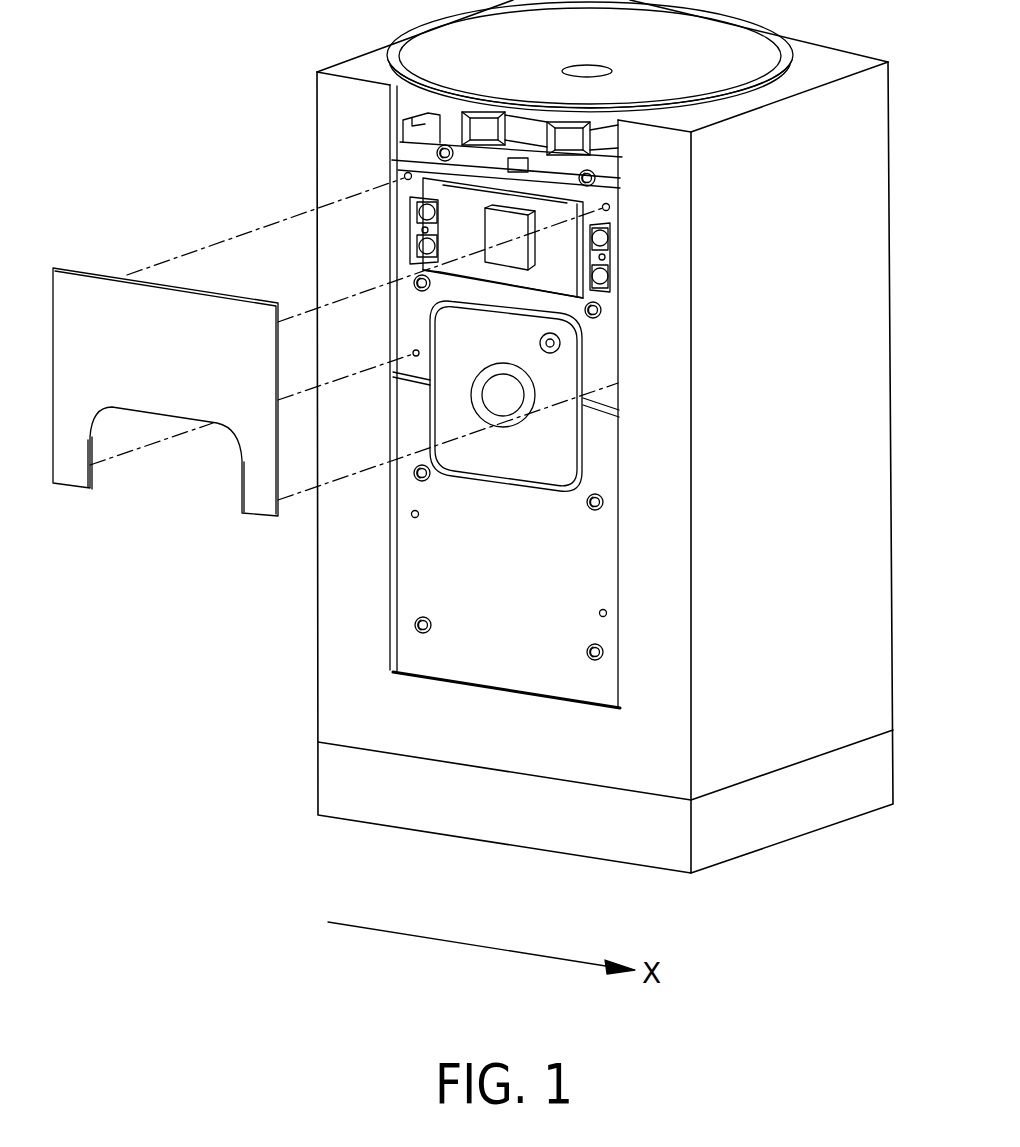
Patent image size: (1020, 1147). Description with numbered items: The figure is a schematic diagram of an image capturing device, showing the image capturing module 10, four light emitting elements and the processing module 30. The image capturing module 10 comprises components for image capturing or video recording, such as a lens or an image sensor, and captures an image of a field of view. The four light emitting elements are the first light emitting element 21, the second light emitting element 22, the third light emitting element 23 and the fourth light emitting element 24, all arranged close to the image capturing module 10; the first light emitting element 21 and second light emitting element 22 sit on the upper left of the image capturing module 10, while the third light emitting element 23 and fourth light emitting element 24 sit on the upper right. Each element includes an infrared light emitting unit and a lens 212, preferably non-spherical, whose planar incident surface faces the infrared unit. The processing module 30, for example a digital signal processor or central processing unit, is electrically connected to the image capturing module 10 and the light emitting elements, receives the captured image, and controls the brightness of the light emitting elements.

The image capturing module 10 is at (527, 383).
The first light emitting element 21 is at (407, 175).
The lens 212 is at (416, 213).
The second light emitting element 22 is at (418, 248).
The third light emitting element 23 is at (607, 277).
The fourth light emitting element 24 is at (607, 238).
The processing module 30 is at (523, 219).